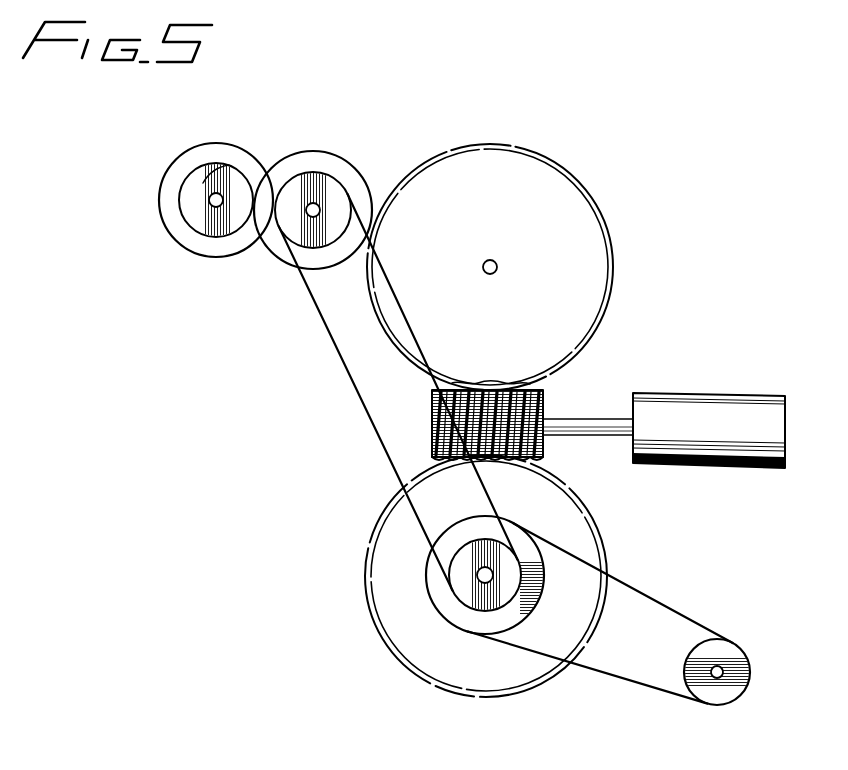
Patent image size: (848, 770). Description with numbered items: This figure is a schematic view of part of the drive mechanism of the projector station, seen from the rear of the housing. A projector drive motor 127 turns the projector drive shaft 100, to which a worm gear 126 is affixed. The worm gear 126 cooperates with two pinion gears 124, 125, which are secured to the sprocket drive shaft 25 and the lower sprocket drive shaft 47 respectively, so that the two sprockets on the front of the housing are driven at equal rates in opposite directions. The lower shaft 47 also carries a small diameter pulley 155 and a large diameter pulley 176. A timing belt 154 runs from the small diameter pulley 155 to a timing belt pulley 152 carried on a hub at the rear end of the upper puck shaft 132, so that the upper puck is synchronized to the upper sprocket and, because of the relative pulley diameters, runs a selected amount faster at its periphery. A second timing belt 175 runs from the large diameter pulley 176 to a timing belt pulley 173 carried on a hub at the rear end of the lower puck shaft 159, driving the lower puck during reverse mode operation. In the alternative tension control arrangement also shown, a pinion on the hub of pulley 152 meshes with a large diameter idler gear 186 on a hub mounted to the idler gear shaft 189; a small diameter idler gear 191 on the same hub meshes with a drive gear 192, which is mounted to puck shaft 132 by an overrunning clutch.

The sprocket drive shaft 25 is at (497, 267).
The lower sprocket drive shaft 47 is at (478, 580).
The projector drive shaft 100 is at (562, 420).
The pinion gear 124 is at (609, 231).
The pinion gear 125 is at (598, 528).
The worm gear 126 is at (548, 397).
The projector drive motor 127 is at (678, 394).
The puck shaft 132 is at (320, 207).
The timing belt pulley 152 is at (313, 185).
The timing belt 154 is at (322, 322).
The small diameter pulley 155 is at (473, 633).
The puck shaft 159 is at (724, 668).
The timing belt pulley 173 is at (731, 685).
The timing belt 175 is at (628, 585).
The large diameter pulley 176 is at (428, 575).
The large diameter idler gear 186 is at (172, 160).
The idler gear shaft 189 is at (212, 206).
The small diameter idler gear 191 is at (226, 175).
The drive gear 192 is at (282, 252).